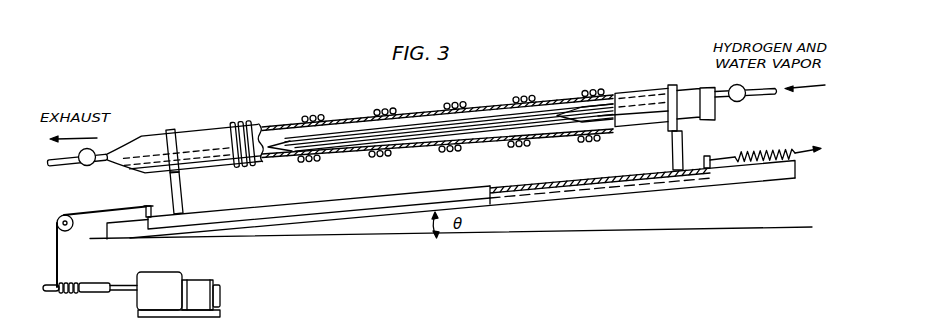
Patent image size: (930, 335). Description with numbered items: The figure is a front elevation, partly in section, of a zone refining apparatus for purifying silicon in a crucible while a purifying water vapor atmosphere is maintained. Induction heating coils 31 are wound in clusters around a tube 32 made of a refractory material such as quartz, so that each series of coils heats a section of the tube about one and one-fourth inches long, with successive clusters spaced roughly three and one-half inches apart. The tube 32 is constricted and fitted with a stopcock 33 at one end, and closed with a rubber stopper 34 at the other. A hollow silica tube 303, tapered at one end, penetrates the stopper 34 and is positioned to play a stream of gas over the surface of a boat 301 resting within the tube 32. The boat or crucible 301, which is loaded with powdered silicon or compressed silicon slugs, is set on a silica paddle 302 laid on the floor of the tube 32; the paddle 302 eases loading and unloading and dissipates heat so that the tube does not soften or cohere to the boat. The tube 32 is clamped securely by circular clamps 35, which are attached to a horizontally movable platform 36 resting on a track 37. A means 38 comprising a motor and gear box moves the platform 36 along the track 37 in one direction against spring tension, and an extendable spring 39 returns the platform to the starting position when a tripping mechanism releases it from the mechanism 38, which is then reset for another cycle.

The induction heating coils 31 is at (312, 114).
The tube 32 is at (197, 131).
The stopcock 33 is at (85, 166).
The stopper 34 is at (716, 109).
The circular clamps 35 is at (182, 189).
The horizontally movable platform 36 is at (343, 199).
The track 37 is at (778, 180).
The means comprising a motor and gear box 38 is at (137, 300).
The extendable spring 39 is at (751, 156).
The boat 301 is at (346, 140).
The silica paddle 302 is at (283, 148).
The hollow tube 303 is at (512, 111).